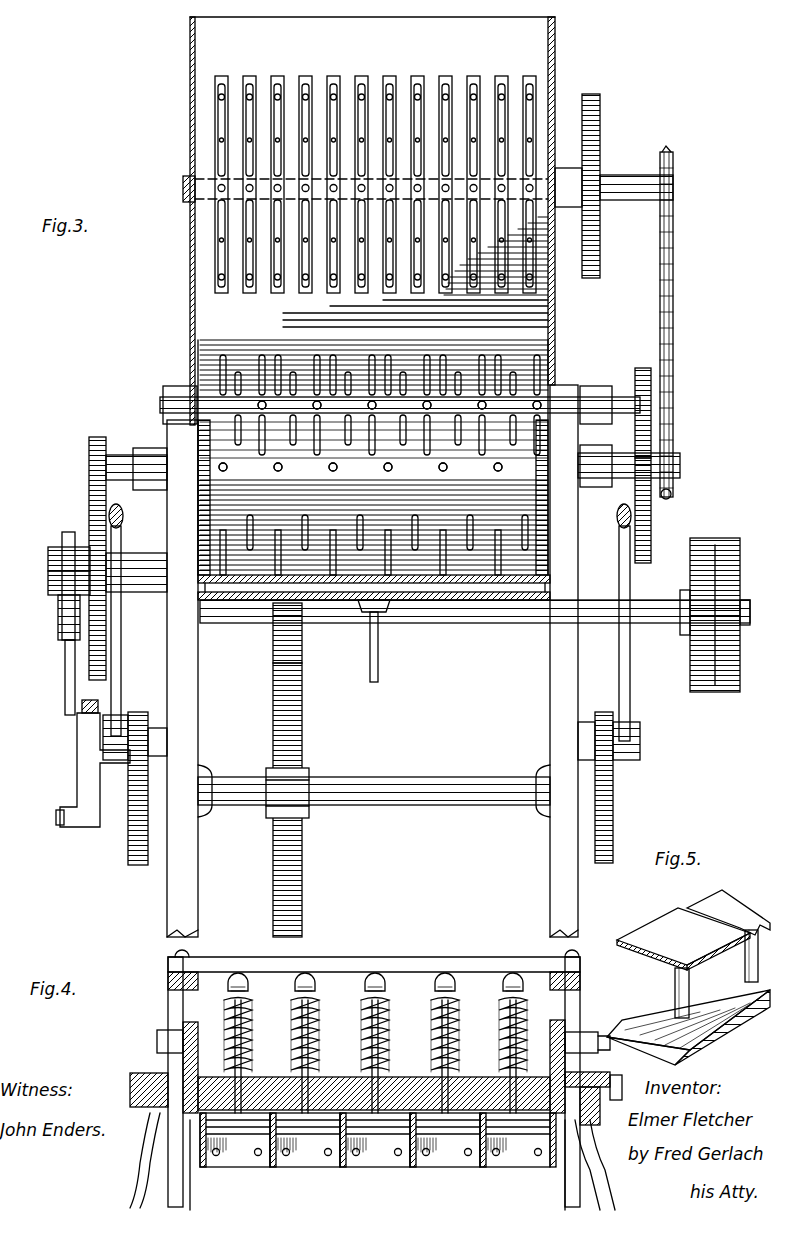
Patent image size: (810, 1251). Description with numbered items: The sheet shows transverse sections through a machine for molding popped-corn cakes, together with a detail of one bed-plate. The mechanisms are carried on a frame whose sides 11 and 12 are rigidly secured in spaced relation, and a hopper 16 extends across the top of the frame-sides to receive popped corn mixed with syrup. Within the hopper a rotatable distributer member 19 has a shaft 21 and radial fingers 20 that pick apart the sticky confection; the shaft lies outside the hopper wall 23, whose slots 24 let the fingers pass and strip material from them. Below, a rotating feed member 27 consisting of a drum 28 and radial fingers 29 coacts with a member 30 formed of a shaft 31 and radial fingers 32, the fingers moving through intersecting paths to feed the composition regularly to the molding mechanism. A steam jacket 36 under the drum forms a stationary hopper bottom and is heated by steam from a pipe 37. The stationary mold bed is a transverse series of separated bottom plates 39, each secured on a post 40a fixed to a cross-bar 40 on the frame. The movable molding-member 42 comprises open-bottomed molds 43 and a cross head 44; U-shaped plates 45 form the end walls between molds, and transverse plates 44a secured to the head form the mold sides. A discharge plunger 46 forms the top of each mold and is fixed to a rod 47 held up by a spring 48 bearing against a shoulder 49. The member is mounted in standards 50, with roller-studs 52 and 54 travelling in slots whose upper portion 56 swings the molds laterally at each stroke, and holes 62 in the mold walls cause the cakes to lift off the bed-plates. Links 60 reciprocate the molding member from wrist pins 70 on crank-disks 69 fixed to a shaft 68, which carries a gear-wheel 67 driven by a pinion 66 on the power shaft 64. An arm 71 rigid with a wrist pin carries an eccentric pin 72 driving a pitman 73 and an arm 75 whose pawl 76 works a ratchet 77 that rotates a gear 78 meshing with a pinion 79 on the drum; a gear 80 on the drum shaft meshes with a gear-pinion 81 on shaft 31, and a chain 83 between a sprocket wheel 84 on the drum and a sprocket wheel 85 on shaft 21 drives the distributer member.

In FIG. 3, the frame side 11 is at (190, 903).
In FIG. 3, the frame side 12 is at (550, 885).
In FIG. 3, the hopper 16 is at (372, 221).
In FIG. 3, the rotatable member 19 is at (345, 148).
In FIG. 3, the radial fingers 20 is at (465, 76).
In FIG. 3, the shaft 21 is at (183, 188).
In FIG. 3, the hopper wall 23 is at (415, 313).
In FIG. 3, the slots 24 is at (250, 293).
In FIG. 3, the rotating feed member 27 is at (373, 457).
In FIG. 3, the drum 28 is at (360, 471).
In FIG. 3, the radial fingers 29 is at (222, 530).
In FIG. 3, the coacting feed member 30 is at (255, 540).
In FIG. 3, the shaft 31 is at (460, 395).
In FIG. 3, the radial fingers 32 is at (372, 400).
In FIG. 3, the steam jacket 36 is at (428, 600).
In FIG. 3, the pipe 37 is at (370, 660).
In FIG. 5, the bottom plates 39 is at (693, 930).
In FIG. 5, the cross-bar 40 is at (715, 1035).
In FIG. 5, the post 40a is at (675, 985).
In FIG. 4, the movable molding-member 42 is at (356, 1167).
In FIG. 4, the open-bottomed molds 43 is at (378, 1140).
In FIG. 4, the cross head 44 is at (338, 1077).
In FIG. 4, the transverse plates 44a is at (462, 1167).
In FIG. 4, the U-shaped plates 45 is at (272, 1167).
In FIG. 4, the discharge plunger 46 is at (203, 1167).
In FIG. 4, the rod 47 is at (278, 1024).
In FIG. 4, the spring 48 is at (318, 1025).
In FIG. 4, the shoulder 49 is at (248, 993).
In FIG. 4, the standards 50 is at (190, 1196).
In FIG. 4, the roller-studs 52 is at (592, 1078).
In FIG. 4, the roller-studs 54 is at (578, 1035).
In FIG. 4, the upper slot portion 56 is at (168, 1014).
In FIG. 3, the links 60 is at (124, 517).
In FIG. 4, the links 60 is at (140, 1165).
In FIG. 4, the holes 62 is at (326, 1155).
In FIG. 3, the shaft 64 is at (497, 625).
In FIG. 3, the pinion 66 is at (280, 625).
In FIG. 3, the gear-wheel 67 is at (302, 732).
In FIG. 3, the shaft 68 is at (440, 805).
In FIG. 3, the crank-disks 69 is at (128, 850).
In FIG. 3, the wrist pins 70 is at (160, 725).
In FIG. 3, the arm 71 is at (88, 783).
In FIG. 3, the pin 72 is at (56, 820).
In FIG. 3, the pitman 73 is at (65, 725).
In FIG. 3, the arm 75 is at (52, 622).
In FIG. 3, the pawl 76 is at (58, 632).
In FIG. 3, the ratchet 77 is at (68, 532).
In FIG. 3, the gear 78 is at (89, 665).
In FIG. 3, the pinion 79 is at (97, 437).
In FIG. 3, the gear 80 is at (651, 528).
In FIG. 3, the gear-pinion 81 is at (638, 368).
In FIG. 3, the chain 83 is at (673, 330).
In FIG. 3, the sprocket wheel 84 is at (672, 494).
In FIG. 3, the sprocket wheel 85 is at (673, 180).